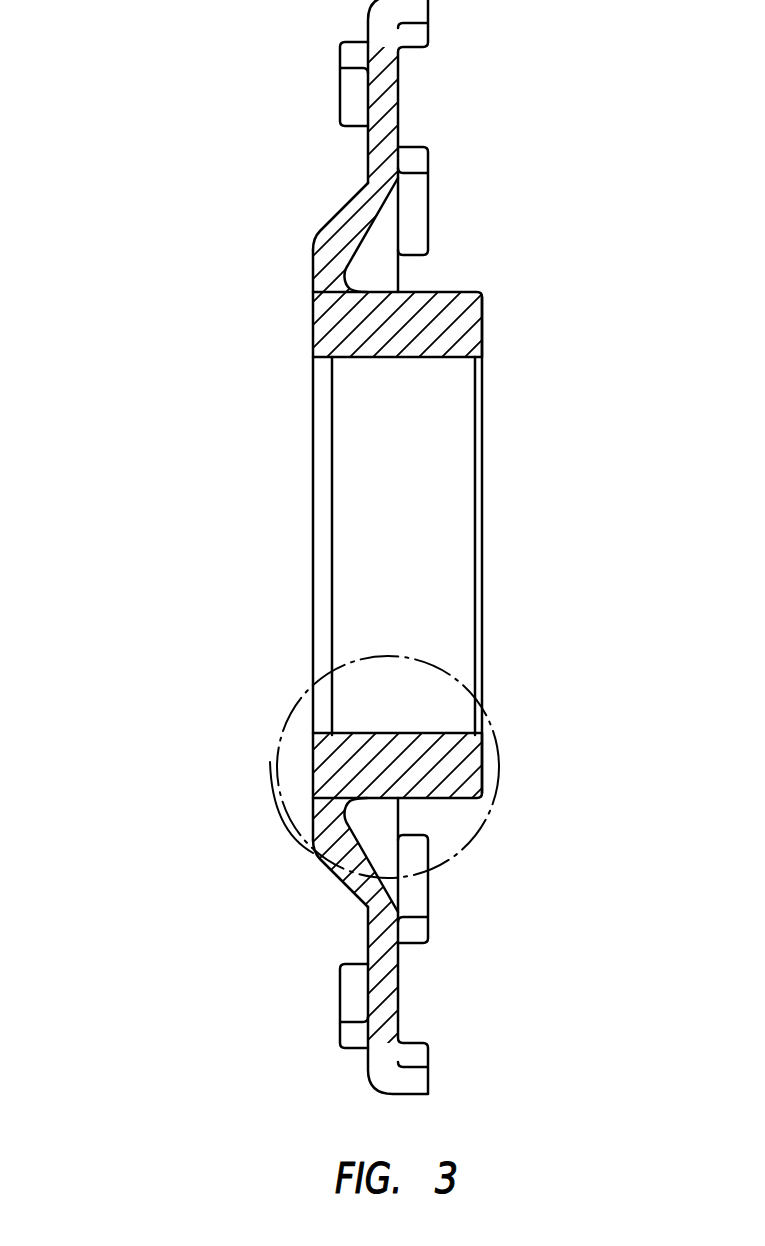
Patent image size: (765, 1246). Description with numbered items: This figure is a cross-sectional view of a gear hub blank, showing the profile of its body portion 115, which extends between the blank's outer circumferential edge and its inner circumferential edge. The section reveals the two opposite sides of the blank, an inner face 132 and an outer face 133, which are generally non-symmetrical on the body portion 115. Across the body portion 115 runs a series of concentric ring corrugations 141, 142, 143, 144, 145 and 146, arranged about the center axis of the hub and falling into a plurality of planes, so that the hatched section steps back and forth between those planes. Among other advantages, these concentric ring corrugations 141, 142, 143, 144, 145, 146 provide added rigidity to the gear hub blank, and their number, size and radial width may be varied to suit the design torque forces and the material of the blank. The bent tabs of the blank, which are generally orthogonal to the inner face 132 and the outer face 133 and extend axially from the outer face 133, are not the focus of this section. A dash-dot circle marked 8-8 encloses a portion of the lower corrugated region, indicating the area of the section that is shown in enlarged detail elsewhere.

The body portion 115 is at (280, 294).
The inner face 132 is at (398, 997).
The outer face 133 is at (313, 807).
The concentric ring corrugation 141 is at (327, 340).
The concentric ring corrugation 142 is at (312, 343).
The concentric ring corrugation 143 is at (312, 253).
The concentric ring corrugation 144 is at (317, 232).
The concentric ring corrugation 145 is at (364, 178).
The concentric ring corrugation 146 is at (365, 138).
The section line 8-8 is at (500, 740).